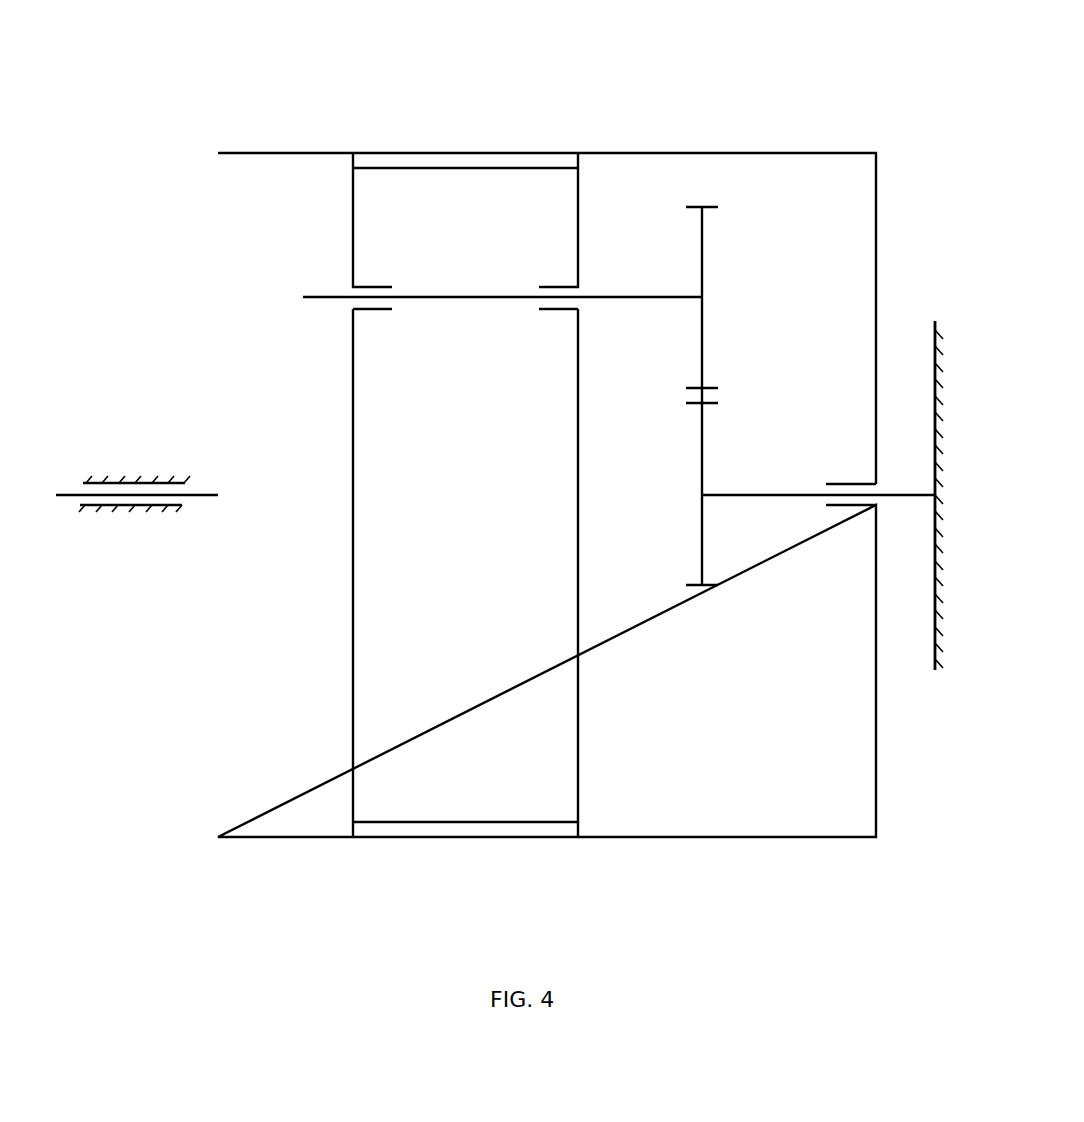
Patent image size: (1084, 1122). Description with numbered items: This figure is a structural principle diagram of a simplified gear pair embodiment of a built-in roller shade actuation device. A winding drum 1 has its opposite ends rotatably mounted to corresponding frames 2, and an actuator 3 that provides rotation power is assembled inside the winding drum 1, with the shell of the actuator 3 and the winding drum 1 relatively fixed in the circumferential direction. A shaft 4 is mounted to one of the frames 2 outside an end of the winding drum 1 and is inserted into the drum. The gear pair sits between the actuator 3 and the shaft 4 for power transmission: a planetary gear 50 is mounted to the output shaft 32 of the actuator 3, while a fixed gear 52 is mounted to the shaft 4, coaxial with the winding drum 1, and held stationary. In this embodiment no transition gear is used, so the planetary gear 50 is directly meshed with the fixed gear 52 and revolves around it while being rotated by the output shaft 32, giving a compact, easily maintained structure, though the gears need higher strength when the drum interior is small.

The winding drum 1 is at (753, 837).
The frame 2 is at (935, 622).
The actuator 3 is at (578, 673).
The output shaft 32 is at (460, 297).
The shaft 4 is at (764, 495).
The planetary gear 50 is at (703, 250).
The fixed gear 52 is at (703, 533).